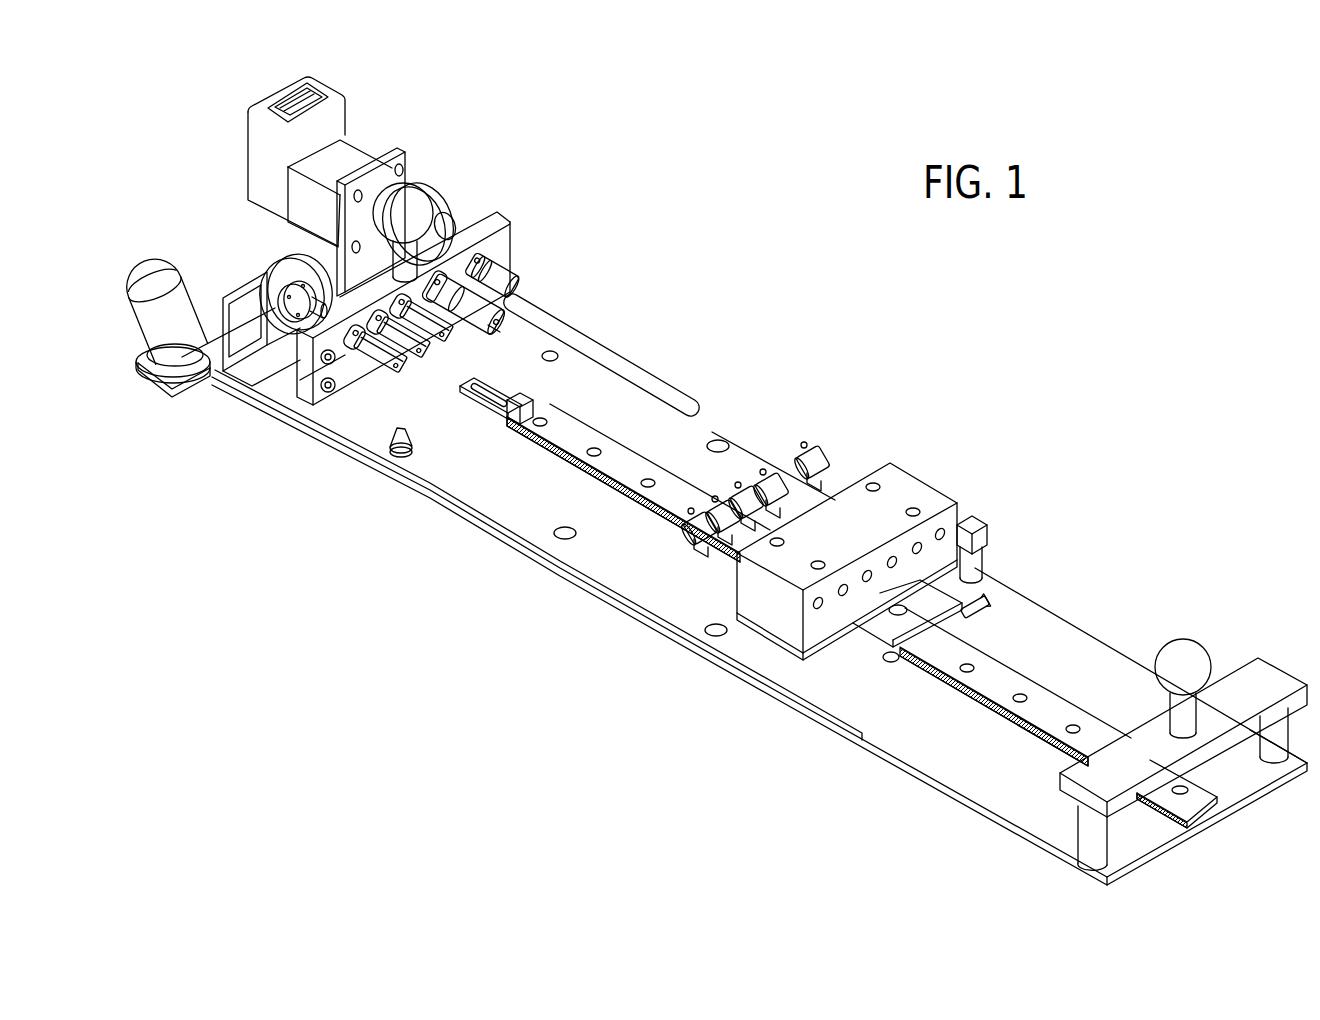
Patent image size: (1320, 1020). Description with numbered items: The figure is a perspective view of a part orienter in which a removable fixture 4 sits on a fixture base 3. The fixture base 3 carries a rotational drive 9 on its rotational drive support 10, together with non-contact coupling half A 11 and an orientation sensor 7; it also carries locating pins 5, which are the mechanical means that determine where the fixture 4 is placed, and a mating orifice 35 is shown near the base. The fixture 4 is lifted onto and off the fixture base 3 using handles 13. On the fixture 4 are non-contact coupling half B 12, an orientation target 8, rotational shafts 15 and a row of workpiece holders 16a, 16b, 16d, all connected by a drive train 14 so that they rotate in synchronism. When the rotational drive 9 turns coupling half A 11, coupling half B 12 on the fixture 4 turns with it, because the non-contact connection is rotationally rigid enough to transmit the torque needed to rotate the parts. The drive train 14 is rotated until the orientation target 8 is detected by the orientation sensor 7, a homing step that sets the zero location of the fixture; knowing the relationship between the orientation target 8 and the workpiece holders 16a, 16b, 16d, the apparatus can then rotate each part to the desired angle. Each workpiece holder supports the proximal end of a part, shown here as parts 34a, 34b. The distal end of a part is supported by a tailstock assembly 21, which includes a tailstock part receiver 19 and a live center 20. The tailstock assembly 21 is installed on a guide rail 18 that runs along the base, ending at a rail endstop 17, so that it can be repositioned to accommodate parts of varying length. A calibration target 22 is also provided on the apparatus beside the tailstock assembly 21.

The fixture base 3 is at (713, 670).
The fixture 4 is at (460, 503).
The locating pins 5 is at (480, 340).
The orientation sensor 7 is at (140, 367).
The orientation target 8 is at (300, 255).
The rotational drive 9 is at (345, 130).
The rotational drive support 10 is at (340, 185).
The non-contact coupling half A 11 is at (403, 178).
The non-contact coupling half B 12 is at (448, 207).
The handles 13 is at (432, 203).
The drive train 14 is at (505, 215).
The rotational shafts 15 is at (512, 275).
The workpiece holder 16a is at (520, 275).
The workpiece holder 16b is at (513, 286).
The workpiece holder 16d is at (423, 340).
The rail endstop 17 is at (533, 393).
The guide rail 18 is at (652, 464).
The tailstock part receiver 19 is at (837, 453).
The live center 20 is at (857, 473).
The tailstock assembly 21 is at (915, 480).
The calibration target 22 is at (985, 515).
The part 34a is at (680, 390).
The part 34b is at (493, 317).
The mating orifice 35 is at (400, 443).